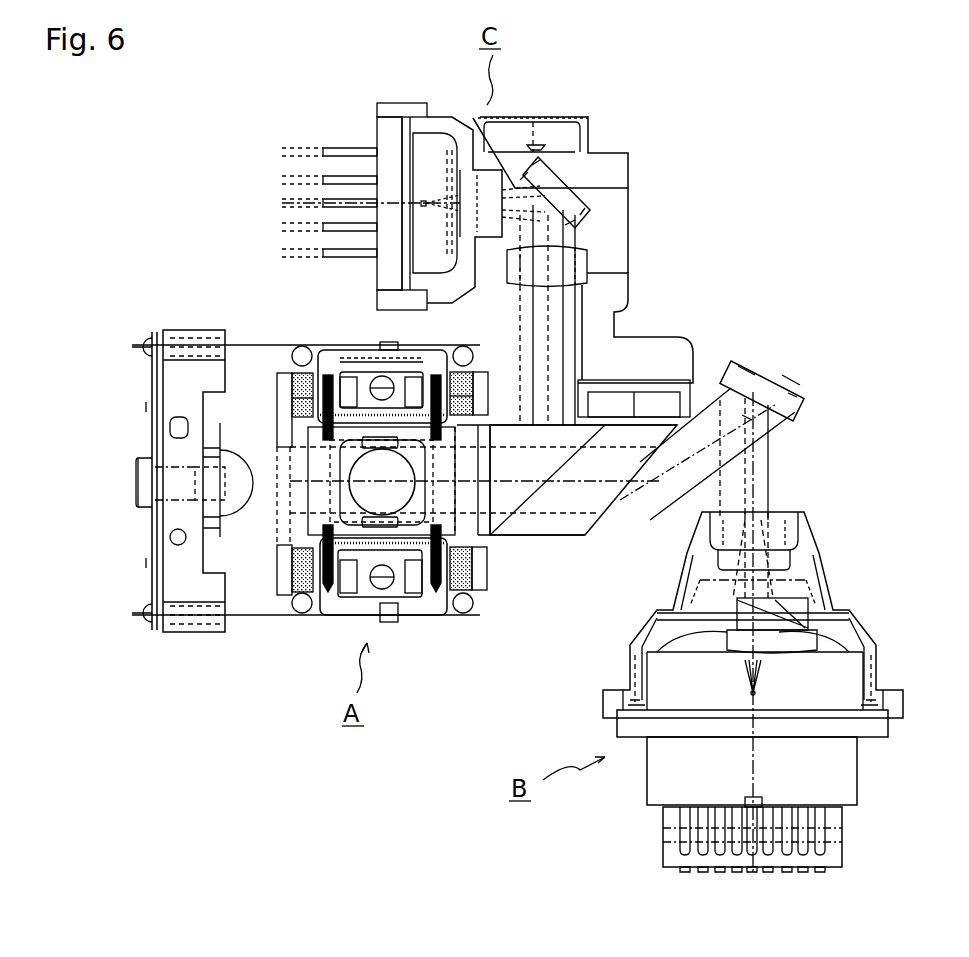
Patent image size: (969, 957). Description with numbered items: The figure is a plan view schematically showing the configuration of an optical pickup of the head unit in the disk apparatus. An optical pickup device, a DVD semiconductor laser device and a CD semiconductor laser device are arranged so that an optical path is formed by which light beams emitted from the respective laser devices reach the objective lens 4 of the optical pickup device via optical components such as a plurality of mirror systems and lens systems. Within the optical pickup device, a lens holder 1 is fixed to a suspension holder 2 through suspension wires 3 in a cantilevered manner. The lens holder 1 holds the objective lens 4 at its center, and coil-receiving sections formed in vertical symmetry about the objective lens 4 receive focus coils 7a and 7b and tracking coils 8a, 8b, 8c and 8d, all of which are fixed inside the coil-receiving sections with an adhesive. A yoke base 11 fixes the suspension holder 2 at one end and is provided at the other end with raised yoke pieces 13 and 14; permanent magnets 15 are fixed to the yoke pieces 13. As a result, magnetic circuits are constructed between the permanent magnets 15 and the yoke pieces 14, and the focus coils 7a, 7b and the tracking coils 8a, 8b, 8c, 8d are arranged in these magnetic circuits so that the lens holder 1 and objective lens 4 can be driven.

The lens holder 1 is at (318, 468).
The suspension holder 2 is at (167, 447).
The suspension wires 3 is at (243, 345).
The objective lens 4 is at (415, 482).
The focus coil 7a is at (442, 372).
The focus coil 7b is at (427, 587).
The tracking coil 8a is at (323, 398).
The tracking coil 8b is at (441, 402).
The tracking coil 8c is at (323, 560).
The tracking coil 8d is at (441, 550).
The yoke base 11 is at (185, 527).
The yoke pieces 13 is at (285, 385).
The yoke pieces 14 is at (353, 387).
The permanent magnets 15 is at (302, 380).